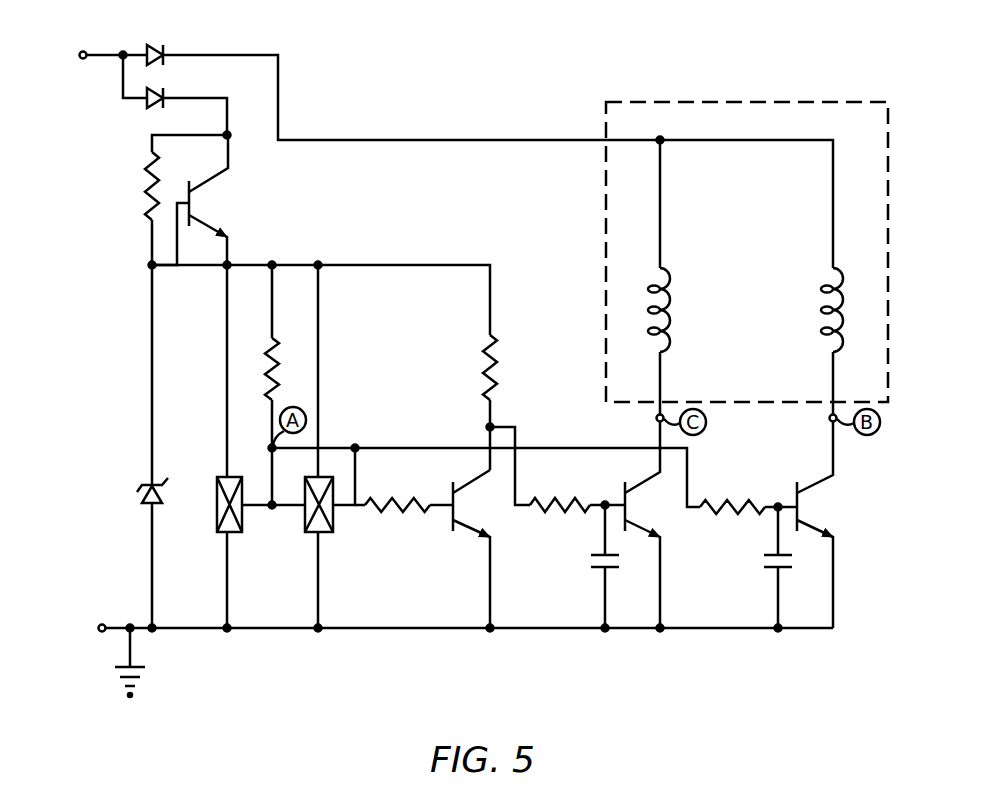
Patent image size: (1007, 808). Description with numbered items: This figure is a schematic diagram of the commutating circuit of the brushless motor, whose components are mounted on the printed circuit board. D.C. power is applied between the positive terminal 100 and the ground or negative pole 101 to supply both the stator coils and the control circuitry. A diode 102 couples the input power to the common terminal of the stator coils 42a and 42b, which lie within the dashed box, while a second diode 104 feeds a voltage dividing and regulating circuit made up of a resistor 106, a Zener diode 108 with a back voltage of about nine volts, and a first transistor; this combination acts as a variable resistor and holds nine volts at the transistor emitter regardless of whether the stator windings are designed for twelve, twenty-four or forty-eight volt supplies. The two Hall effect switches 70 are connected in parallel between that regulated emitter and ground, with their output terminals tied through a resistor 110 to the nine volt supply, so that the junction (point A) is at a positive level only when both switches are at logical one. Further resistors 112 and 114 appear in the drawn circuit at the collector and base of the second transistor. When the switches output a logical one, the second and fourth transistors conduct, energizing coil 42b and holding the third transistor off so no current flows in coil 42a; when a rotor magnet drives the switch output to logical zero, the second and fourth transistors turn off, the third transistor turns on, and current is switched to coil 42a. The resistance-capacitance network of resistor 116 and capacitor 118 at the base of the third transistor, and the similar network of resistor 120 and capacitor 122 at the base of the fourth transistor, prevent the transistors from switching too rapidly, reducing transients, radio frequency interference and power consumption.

The positive terminal 100 is at (83, 51).
The diode 102 is at (153, 48).
The diode 104 is at (150, 106).
The resistor 106 is at (143, 190).
The Zener diode 108 is at (140, 490).
The ground or negative pole 101 is at (101, 623).
The resistor 110 is at (282, 340).
The resistor 112 is at (495, 352).
The resistor 114 is at (402, 518).
The resistor 116 is at (565, 508).
The capacitor 118 is at (591, 562).
The resistor 120 is at (745, 510).
The capacitor 122 is at (765, 565).
The Hall effect switches 70 is at (245, 519).
The stator coil 42a is at (716, 266).
The stator coil 42b is at (830, 331).